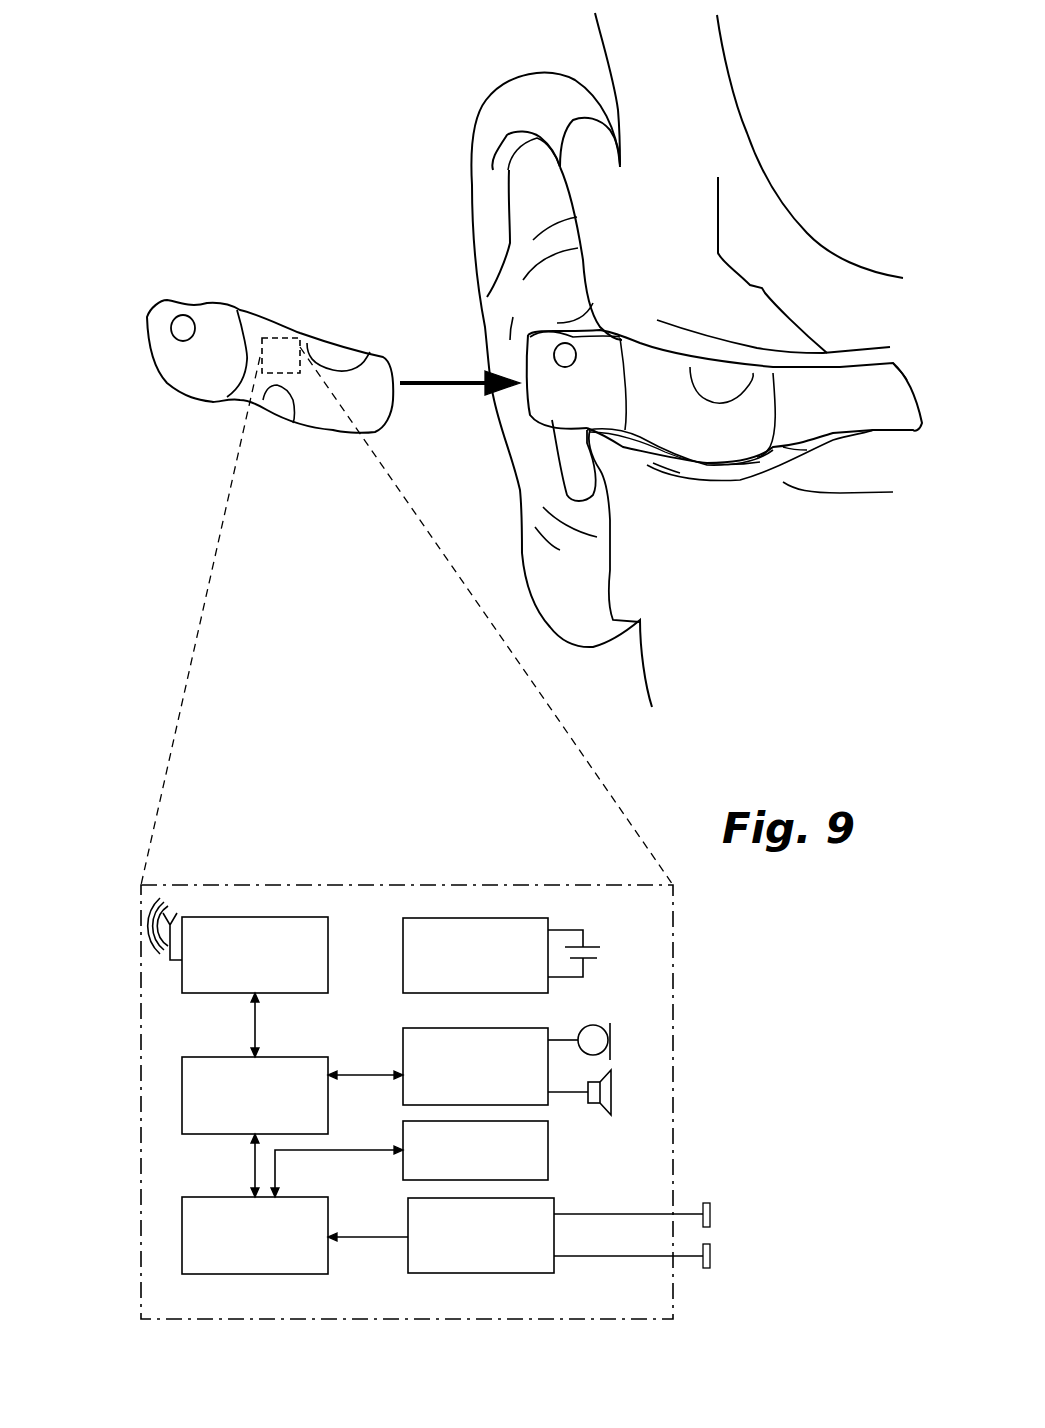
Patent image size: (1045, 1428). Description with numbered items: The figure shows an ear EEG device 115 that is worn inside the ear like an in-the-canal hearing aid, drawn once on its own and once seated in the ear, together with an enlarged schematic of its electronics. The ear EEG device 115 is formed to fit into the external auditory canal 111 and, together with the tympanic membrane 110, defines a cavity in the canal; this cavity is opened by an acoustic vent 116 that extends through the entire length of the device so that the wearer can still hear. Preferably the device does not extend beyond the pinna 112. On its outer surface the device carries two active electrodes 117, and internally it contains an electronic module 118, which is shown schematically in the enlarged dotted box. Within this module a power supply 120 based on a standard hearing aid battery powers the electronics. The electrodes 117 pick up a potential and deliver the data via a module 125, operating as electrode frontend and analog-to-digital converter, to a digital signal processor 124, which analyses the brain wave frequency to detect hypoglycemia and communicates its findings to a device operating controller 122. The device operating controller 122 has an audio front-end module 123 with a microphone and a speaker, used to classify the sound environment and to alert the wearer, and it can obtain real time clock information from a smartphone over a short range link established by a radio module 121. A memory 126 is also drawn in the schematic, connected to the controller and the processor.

The tympanic membrane 110 is at (927, 440).
The external auditory canal 111 is at (783, 447).
The pinna 112 is at (470, 180).
The ear EEG device 115 is at (233, 300).
The acoustic vent 116 is at (183, 333).
The active electrodes 117 is at (345, 367).
The electronic module 118 is at (275, 343).
The power supply 120 is at (425, 917).
The radio module 121 is at (178, 985).
The device operating controller 122 is at (177, 1087).
The audio front-end module 123 is at (535, 1028).
The digital signal processor 124 is at (172, 1232).
The electrode frontend and ADC module 125 is at (557, 1202).
The memory 126 is at (553, 1155).